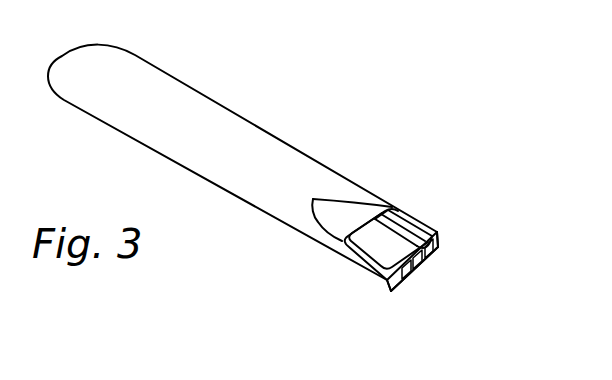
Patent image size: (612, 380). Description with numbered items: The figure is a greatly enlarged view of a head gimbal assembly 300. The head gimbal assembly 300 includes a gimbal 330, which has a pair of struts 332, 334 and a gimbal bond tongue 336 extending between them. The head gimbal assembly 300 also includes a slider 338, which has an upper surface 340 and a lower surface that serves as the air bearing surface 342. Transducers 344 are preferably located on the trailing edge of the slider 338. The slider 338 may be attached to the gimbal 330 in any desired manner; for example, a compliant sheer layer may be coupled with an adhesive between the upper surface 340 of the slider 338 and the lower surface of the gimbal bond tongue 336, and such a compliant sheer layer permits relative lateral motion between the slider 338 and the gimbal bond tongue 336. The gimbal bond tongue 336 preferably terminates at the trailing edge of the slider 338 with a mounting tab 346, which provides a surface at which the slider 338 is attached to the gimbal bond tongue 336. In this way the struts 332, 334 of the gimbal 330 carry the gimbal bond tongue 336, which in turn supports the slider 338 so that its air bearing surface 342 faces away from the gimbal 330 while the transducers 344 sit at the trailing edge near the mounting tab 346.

The head gimbal assembly 300 is at (291, 90).
The gimbal 330 is at (183, 78).
The strut 332 is at (342, 256).
The strut 334 is at (395, 212).
The gimbal bond tongue 336 is at (428, 237).
The slider 338 is at (417, 281).
The upper surface 340 is at (395, 247).
The air bearing surface 342 is at (388, 290).
The transducers 344 is at (425, 268).
The mounting tab 346 is at (351, 225).